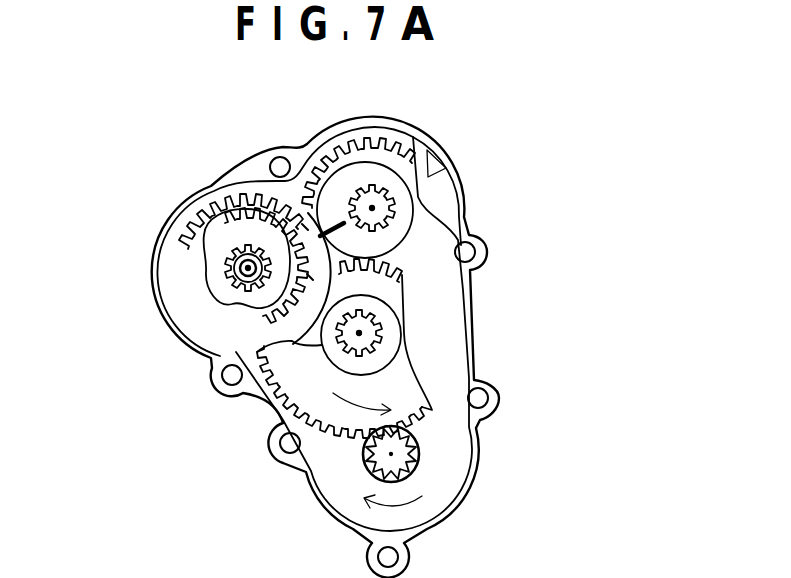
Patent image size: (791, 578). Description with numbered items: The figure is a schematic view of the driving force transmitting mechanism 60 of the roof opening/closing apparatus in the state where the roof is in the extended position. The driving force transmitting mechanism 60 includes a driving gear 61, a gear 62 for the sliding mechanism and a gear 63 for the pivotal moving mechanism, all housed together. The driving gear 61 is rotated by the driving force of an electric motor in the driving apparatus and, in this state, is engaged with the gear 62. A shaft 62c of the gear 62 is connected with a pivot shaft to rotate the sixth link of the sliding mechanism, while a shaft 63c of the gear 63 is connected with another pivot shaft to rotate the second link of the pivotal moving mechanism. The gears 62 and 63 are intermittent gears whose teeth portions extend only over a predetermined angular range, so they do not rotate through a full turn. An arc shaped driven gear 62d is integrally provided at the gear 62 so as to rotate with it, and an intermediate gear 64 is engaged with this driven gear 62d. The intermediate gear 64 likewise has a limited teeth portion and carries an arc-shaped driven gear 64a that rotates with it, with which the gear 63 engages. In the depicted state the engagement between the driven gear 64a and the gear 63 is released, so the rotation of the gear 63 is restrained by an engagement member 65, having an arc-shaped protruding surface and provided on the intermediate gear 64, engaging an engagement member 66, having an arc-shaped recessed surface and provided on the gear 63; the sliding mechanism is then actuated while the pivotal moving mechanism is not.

The driving force transmitting mechanism 60 is at (189, 310).
The driving gear 61 is at (413, 446).
The gear for the sliding mechanism 62 is at (303, 393).
The shaft of the gear for the sliding mechanism 62c is at (359, 333).
The arc shaped driven gear 62d is at (400, 275).
The gear for the pivotal moving mechanism 63 is at (363, 155).
The shaft of the gear for the pivotal moving mechanism 63c is at (378, 213).
The intermediate gear 64 is at (178, 231).
The arc-shaped driven gear 64a is at (212, 228).
The engagement member 65 is at (295, 213).
The engagement member 66 is at (332, 200).